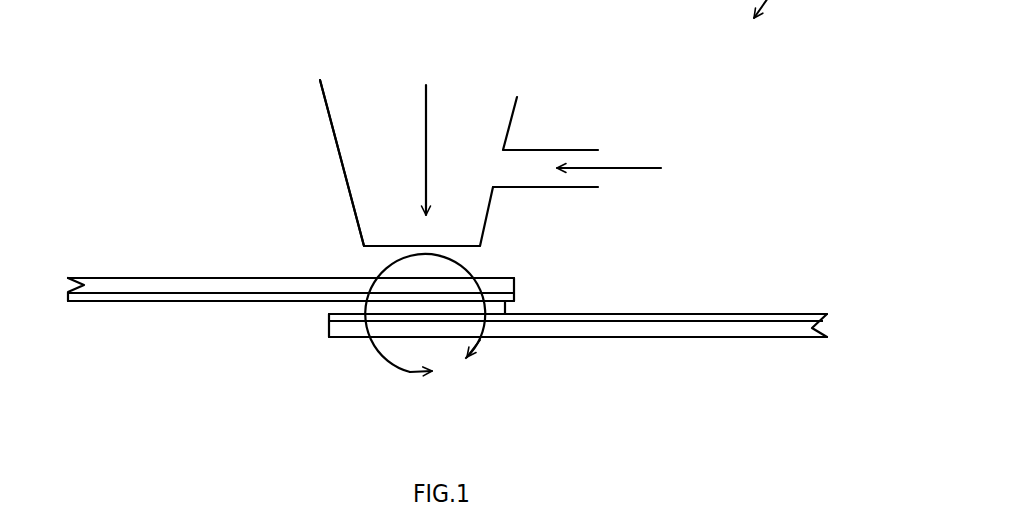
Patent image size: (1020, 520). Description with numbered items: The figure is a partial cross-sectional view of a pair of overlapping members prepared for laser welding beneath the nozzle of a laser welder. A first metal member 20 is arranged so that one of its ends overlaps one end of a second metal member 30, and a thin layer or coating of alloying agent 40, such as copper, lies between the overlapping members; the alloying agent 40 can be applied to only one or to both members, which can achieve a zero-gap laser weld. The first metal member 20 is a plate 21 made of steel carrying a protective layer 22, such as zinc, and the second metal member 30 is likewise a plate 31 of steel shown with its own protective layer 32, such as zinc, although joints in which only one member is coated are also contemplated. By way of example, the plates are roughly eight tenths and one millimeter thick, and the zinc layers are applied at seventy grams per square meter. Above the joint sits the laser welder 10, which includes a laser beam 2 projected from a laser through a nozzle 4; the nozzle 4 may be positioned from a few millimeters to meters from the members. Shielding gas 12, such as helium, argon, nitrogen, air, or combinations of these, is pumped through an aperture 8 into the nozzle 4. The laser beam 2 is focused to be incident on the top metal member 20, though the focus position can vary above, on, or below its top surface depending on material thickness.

The laser beam 2 is at (427, 104).
The nozzle 4 is at (354, 210).
The aperture 8 is at (531, 174).
The laser welder 10 is at (361, 74).
The shielding gas 12 is at (641, 167).
The first metal member 20 is at (156, 270).
The plate 21 is at (99, 283).
The protective layer 22 is at (148, 303).
The second metal member 30 is at (755, 342).
The plate 31 is at (703, 329).
The protective layer 32 is at (777, 311).
The alloying agent 40 is at (352, 306).